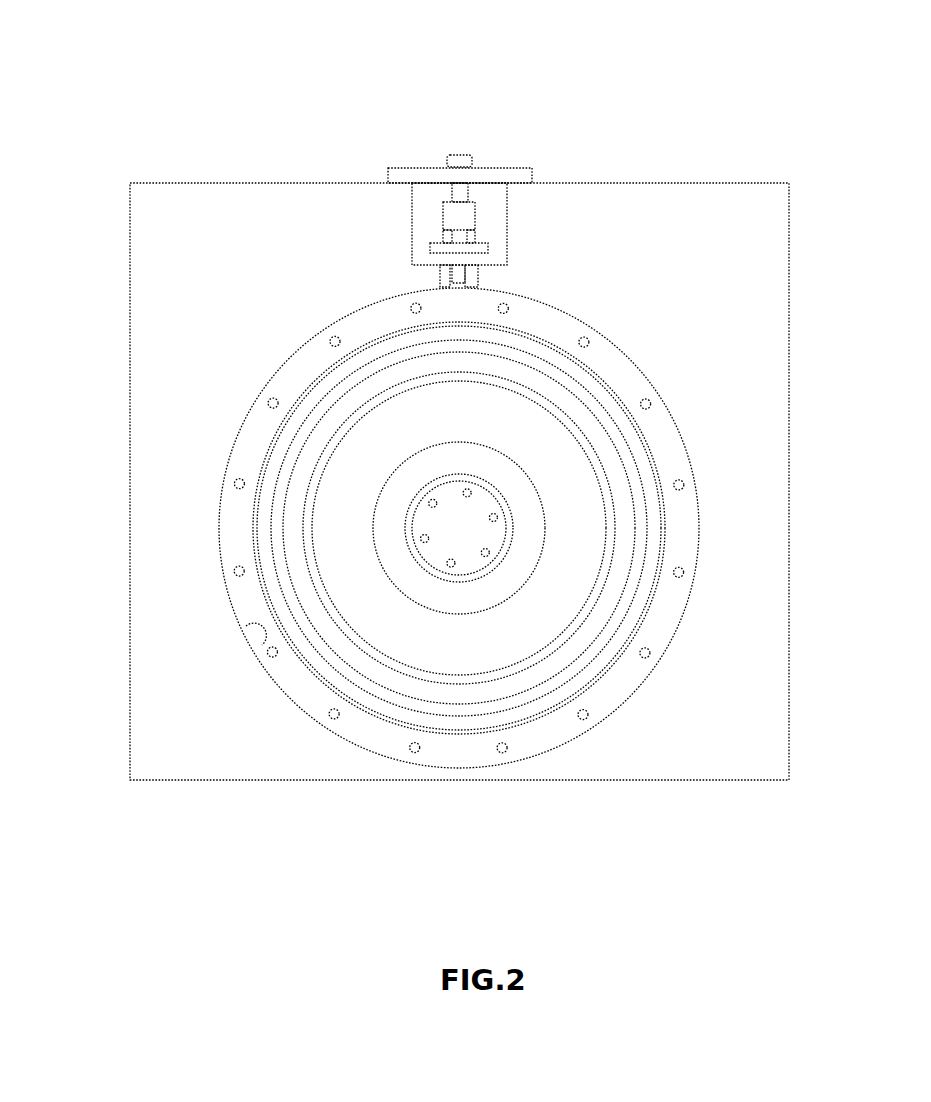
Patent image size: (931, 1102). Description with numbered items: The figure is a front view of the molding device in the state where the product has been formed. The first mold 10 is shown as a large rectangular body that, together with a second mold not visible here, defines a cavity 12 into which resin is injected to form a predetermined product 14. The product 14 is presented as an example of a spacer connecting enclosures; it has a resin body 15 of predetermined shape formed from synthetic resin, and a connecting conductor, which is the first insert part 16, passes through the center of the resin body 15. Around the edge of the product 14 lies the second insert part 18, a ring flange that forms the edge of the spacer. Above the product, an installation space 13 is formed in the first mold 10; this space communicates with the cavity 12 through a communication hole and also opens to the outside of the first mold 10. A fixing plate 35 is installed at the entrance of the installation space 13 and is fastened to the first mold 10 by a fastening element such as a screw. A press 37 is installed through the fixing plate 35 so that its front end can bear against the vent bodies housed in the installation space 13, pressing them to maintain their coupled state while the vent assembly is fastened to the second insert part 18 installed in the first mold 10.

The first mold 10 is at (743, 750).
The cavity 12 is at (255, 652).
The installation space 13 is at (490, 219).
The product 14 is at (685, 440).
The resin body 15 is at (555, 578).
The first insert part 16 is at (465, 545).
The second insert part 18 is at (623, 370).
The fixing plate 35 is at (506, 168).
The press 37 is at (457, 155).